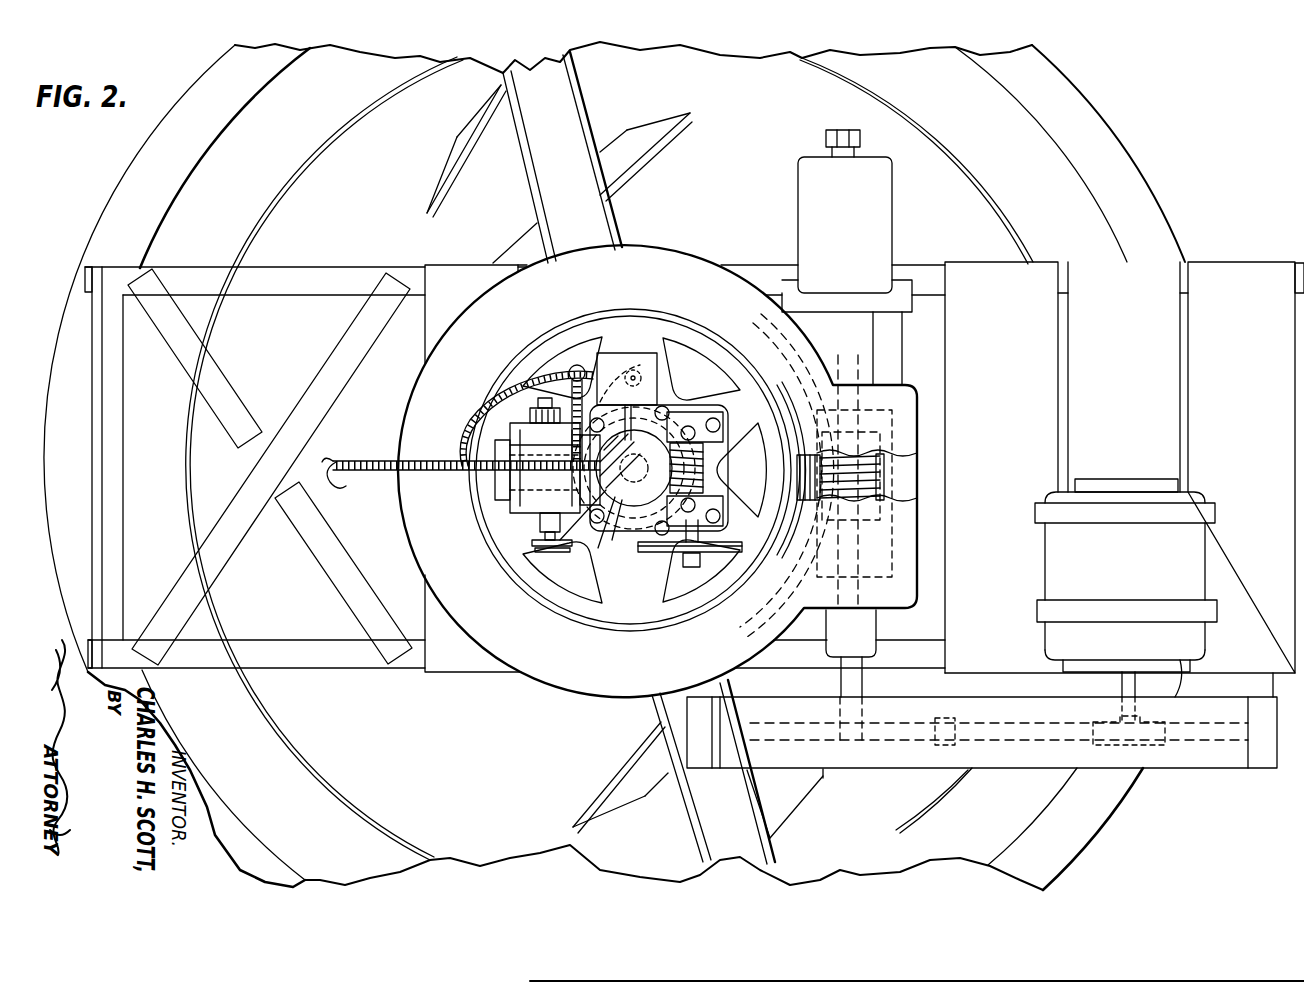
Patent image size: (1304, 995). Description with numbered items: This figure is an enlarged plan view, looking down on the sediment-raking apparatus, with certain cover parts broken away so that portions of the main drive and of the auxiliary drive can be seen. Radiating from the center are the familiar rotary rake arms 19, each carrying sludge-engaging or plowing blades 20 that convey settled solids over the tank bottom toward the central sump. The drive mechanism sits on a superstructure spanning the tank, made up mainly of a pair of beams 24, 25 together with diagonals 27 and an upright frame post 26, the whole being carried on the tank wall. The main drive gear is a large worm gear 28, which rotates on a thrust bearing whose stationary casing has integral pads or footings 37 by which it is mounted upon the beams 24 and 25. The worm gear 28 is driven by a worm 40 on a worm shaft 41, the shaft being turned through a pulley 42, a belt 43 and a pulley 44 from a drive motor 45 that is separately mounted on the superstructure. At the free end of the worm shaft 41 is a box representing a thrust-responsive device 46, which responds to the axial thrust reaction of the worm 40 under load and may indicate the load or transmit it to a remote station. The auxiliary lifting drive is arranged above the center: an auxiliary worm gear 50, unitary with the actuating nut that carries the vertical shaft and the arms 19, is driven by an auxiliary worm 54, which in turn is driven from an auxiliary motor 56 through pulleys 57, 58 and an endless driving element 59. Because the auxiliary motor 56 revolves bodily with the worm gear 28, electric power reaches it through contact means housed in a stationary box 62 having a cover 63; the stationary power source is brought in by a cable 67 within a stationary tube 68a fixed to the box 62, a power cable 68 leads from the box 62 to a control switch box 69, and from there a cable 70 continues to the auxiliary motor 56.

The rotary rake arms 19 is at (575, 116).
The plowing blades 20 is at (662, 158).
The beam 24 is at (292, 275).
The beam 25 is at (348, 662).
The upright frame post 26 is at (123, 520).
The diagonals 27 is at (228, 566).
The worm gear 28 is at (735, 357).
The footings 37 is at (471, 266).
The worm 40 is at (882, 482).
The worm shaft 41 is at (863, 690).
The pulley 42 is at (938, 727).
The belt 43 is at (1026, 728).
The pulley 44 is at (1166, 727).
The drive motor 45 is at (1210, 574).
The thrust-responsive device 46 is at (890, 222).
The auxiliary worm gear 50 is at (702, 452).
The auxiliary worm 54 is at (706, 484).
The auxiliary motor 56 is at (536, 512).
The pulley 57 is at (532, 566).
The pulley 58 is at (722, 560).
The endless driving element 59 is at (584, 549).
The stationary box 62 is at (613, 542).
The cover 63 is at (633, 507).
The cable 67 is at (338, 484).
The power cable 68 is at (545, 398).
The stationary tube 68a is at (397, 462).
The control switch box 69 is at (629, 352).
The cable 70 is at (496, 392).